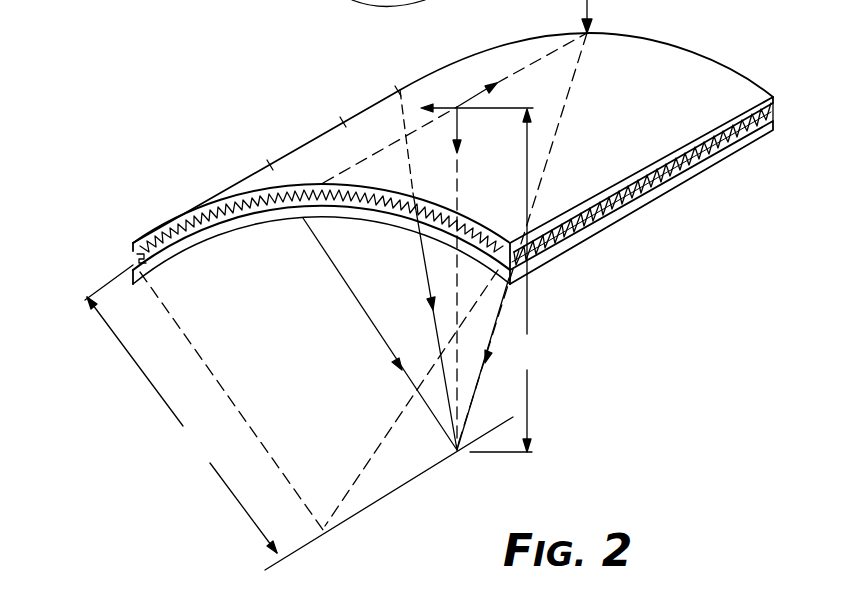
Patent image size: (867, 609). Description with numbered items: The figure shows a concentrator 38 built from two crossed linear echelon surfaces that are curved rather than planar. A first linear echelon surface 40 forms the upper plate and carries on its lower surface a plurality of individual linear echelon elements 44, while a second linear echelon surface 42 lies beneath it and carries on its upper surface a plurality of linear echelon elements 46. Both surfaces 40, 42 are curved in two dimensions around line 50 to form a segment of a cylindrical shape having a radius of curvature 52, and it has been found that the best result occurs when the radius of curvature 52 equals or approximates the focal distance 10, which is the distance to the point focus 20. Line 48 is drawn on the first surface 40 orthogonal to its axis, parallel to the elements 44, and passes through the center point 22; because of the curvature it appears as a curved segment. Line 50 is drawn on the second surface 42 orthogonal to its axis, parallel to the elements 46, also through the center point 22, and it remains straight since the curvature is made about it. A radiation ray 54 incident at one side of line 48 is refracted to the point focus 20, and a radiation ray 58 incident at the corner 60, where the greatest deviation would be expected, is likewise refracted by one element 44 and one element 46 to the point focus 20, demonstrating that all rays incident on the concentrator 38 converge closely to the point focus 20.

The focal distance 10 is at (508, 280).
The point focus 20 is at (458, 454).
The center point 22 is at (455, 240).
The concentrator 38 is at (204, 163).
The first linear echelon surface 40 is at (707, 54).
The second linear echelon surface 42 is at (730, 160).
The individual linear echelon elements 44 is at (139, 262).
The linear echelon elements 46 is at (604, 218).
The line 48 is at (345, 121).
The line 50 is at (553, 52).
The radius of curvature 52 is at (291, 409).
The radiation ray 54 is at (268, 146).
The radiation ray 58 is at (401, 77).
The corner 60 is at (397, 90).